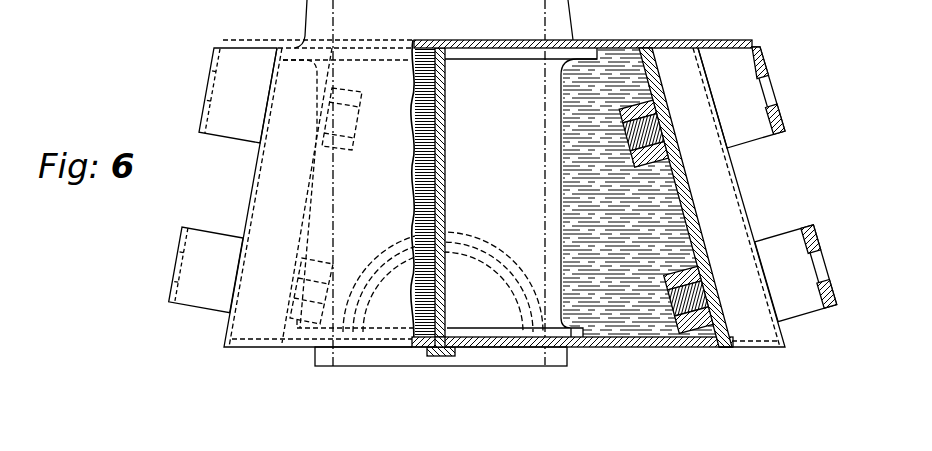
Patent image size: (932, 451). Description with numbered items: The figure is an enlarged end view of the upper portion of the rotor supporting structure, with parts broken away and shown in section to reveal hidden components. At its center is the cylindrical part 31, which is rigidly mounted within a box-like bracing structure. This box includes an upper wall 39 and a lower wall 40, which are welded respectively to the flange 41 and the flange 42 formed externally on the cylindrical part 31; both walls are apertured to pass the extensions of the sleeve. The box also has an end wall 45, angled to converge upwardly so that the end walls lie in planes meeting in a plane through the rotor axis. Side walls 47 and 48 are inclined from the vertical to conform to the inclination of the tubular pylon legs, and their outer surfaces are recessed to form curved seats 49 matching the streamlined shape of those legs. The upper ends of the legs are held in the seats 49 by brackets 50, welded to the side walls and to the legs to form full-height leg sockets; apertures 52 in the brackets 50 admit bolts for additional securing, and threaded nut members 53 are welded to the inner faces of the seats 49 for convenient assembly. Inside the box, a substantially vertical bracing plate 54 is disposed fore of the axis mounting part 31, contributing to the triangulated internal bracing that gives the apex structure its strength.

The cylindrical part 31 is at (503, 194).
The upper wall 39 is at (613, 40).
The lower wall 40 is at (653, 340).
The flange 41 is at (562, 56).
The flange 42 is at (577, 333).
The end wall 45 is at (383, 193).
The side wall 47 is at (255, 183).
The side wall 48 is at (736, 178).
The seat 49 is at (740, 219).
The bracket 50 is at (888, 273).
The aperture 52 is at (823, 255).
The nut member 53 is at (690, 271).
The bracing plate 54 is at (437, 173).